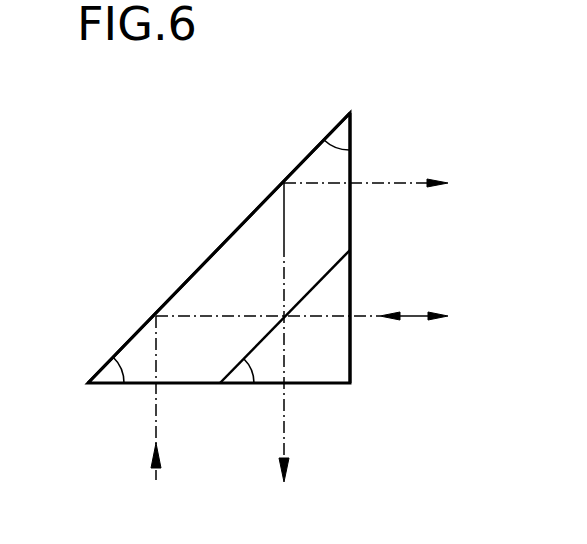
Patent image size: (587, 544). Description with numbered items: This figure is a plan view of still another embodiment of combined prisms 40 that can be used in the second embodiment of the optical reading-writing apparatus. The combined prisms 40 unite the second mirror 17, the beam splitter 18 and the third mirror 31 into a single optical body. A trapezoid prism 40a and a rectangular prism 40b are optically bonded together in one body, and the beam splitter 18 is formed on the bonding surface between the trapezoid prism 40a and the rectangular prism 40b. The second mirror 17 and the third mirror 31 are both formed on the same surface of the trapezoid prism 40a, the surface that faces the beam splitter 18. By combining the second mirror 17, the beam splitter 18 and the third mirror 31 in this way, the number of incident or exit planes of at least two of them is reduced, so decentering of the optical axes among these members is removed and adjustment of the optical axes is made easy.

The combined prisms 40 is at (257, 200).
The trapezoid prism 40a is at (214, 252).
The rectangular prism 40b is at (332, 357).
The third mirror 31 is at (357, 150).
The second mirror 17 is at (122, 383).
The beam splitter 18 is at (242, 383).